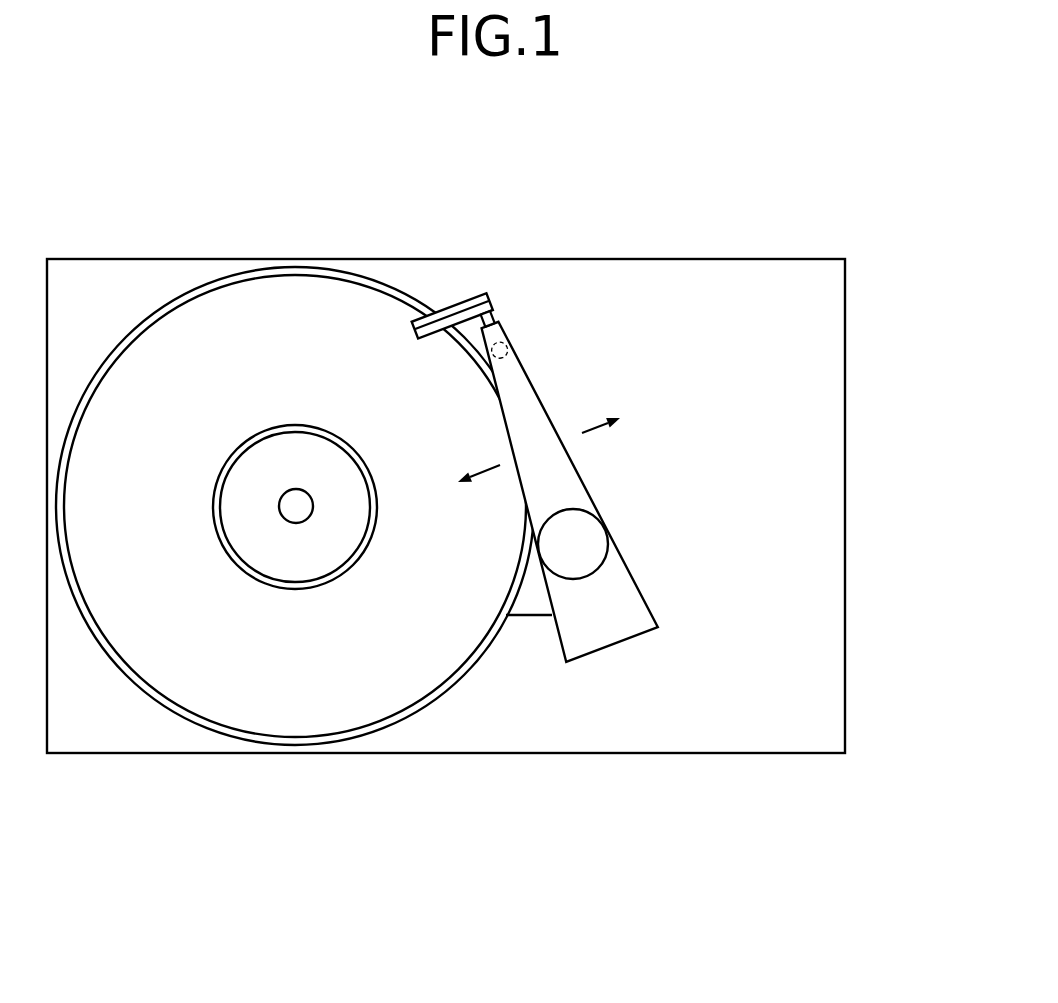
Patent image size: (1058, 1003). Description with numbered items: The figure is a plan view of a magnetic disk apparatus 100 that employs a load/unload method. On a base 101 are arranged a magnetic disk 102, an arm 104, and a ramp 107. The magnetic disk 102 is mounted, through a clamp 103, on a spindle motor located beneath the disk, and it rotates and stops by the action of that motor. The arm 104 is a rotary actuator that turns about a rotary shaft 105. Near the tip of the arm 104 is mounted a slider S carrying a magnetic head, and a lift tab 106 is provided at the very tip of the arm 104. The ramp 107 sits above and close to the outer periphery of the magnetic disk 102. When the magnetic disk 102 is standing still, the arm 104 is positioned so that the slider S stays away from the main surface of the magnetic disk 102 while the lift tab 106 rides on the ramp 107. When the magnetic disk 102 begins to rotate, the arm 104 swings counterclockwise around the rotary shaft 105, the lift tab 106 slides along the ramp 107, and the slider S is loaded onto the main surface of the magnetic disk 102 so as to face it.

The magnetic disk apparatus 100 is at (703, 213).
The base 101 is at (845, 688).
The magnetic disk 102 is at (298, 302).
The clamp 103 is at (300, 551).
The arm 104 is at (590, 496).
The rotary shaft 105 is at (587, 545).
The lift tab 106 is at (494, 312).
The ramp 107 is at (465, 302).
The slider S is at (508, 350).